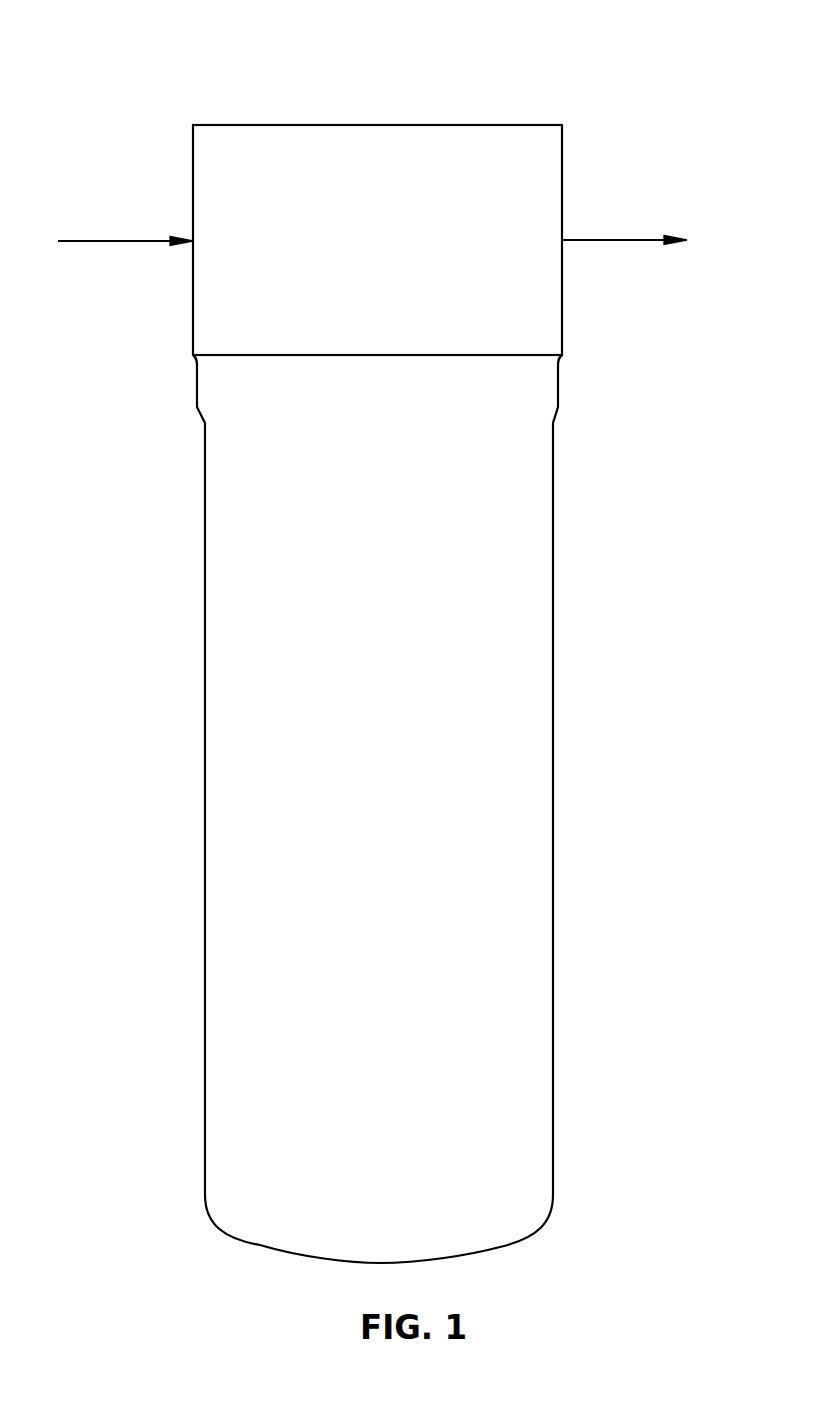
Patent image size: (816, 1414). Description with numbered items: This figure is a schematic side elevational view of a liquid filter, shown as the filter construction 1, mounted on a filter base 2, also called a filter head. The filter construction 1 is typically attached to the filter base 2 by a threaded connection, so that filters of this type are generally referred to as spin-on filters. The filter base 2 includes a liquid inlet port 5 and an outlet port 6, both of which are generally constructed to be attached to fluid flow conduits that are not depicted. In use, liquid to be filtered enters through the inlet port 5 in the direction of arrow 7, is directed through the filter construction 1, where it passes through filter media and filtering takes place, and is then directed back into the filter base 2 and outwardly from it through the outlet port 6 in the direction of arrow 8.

The filter construction 1 is at (553, 765).
The filter base 2 is at (313, 125).
The liquid inlet port 5 is at (193, 252).
The outlet port 6 is at (562, 262).
The arrow 7 is at (116, 240).
The arrow 8 is at (612, 238).